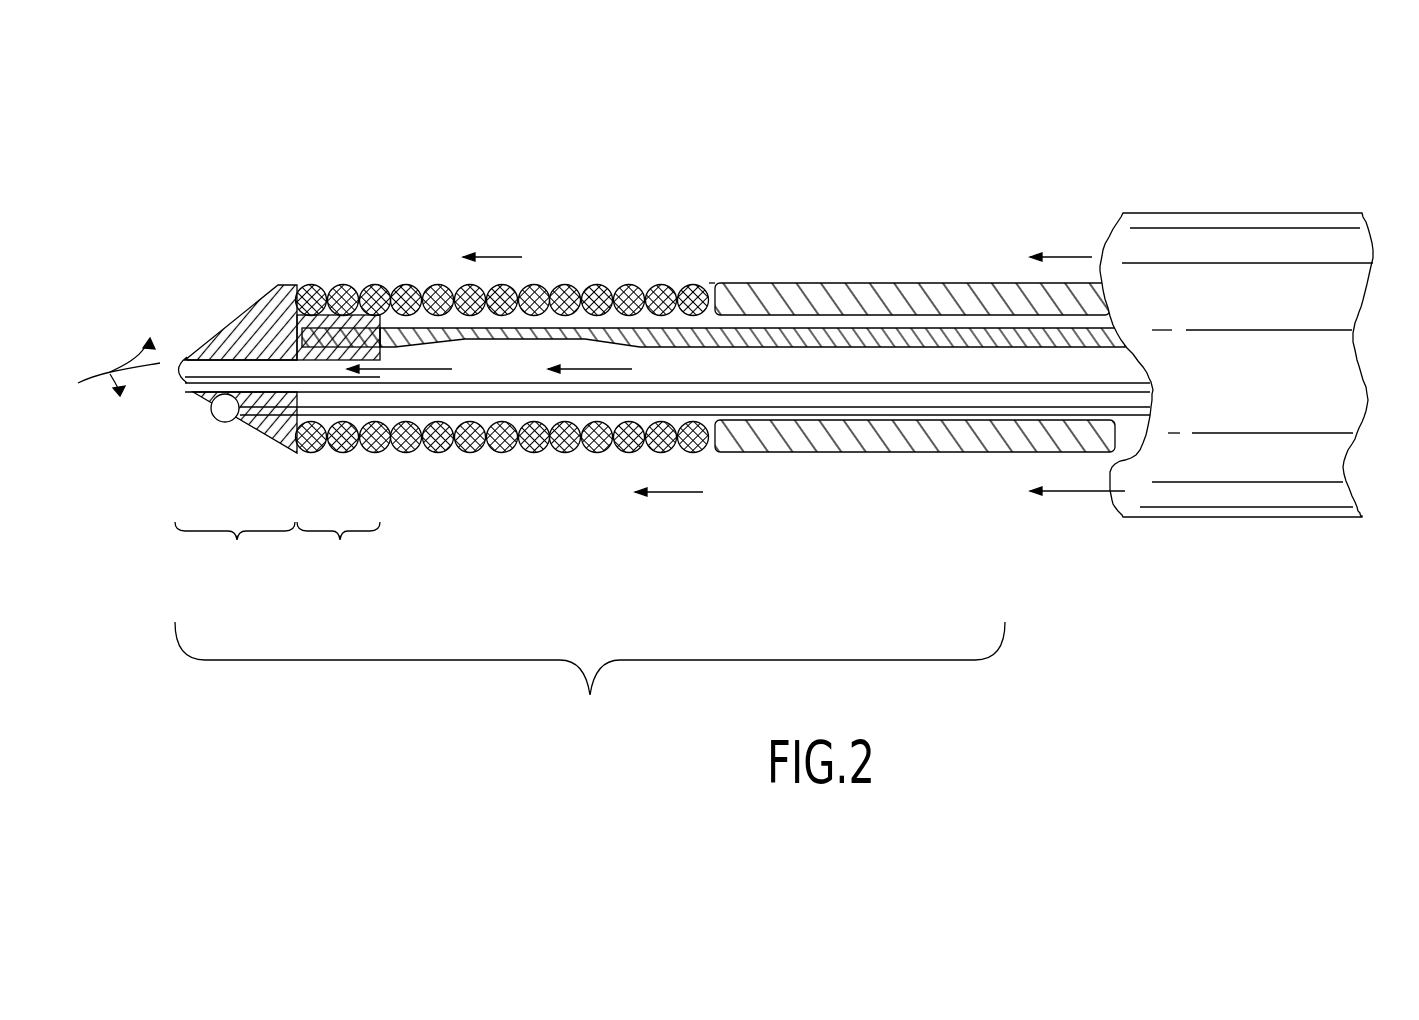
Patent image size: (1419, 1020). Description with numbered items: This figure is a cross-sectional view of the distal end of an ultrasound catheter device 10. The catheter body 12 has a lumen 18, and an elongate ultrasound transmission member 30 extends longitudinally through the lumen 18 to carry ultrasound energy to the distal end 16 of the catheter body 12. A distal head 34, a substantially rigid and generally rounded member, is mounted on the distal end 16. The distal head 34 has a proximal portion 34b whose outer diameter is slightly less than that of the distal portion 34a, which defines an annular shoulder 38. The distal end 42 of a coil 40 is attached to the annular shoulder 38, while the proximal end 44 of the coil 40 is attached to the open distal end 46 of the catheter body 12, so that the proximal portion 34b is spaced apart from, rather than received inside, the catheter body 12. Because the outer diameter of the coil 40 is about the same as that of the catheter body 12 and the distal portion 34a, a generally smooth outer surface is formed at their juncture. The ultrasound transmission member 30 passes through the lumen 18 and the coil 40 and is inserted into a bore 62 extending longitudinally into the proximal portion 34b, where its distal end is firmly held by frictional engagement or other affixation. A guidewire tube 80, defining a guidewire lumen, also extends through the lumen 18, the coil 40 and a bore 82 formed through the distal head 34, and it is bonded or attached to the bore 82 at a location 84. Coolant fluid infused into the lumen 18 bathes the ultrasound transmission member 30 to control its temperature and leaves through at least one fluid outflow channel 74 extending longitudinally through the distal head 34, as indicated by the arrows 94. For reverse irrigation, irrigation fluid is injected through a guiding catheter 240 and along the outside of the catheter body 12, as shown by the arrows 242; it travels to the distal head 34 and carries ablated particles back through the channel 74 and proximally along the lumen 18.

The catheter device 10 is at (590, 680).
The catheter body 12 is at (903, 456).
The distal end 16 is at (205, 262).
The lumen 18 is at (802, 412).
The ultrasound transmission member 30 is at (870, 327).
The distal head 34 is at (270, 278).
The distal portion 34a is at (235, 551).
The proximal portion 34b is at (338, 551).
The annular shoulder 38 is at (345, 318).
The coil 40 is at (600, 287).
The distal end of coil 42 is at (297, 295).
The proximal end of coil 44 is at (710, 283).
The open distal end 46 is at (727, 283).
The bore 62 is at (300, 315).
The fluid outflow channel 74 is at (197, 372).
The guidewire tube 80 is at (555, 397).
The bore 82 is at (224, 423).
The location 84 is at (397, 455).
The arrows 94 is at (682, 368).
The guiding catheter 240 is at (1200, 240).
The arrows 242 is at (160, 345).